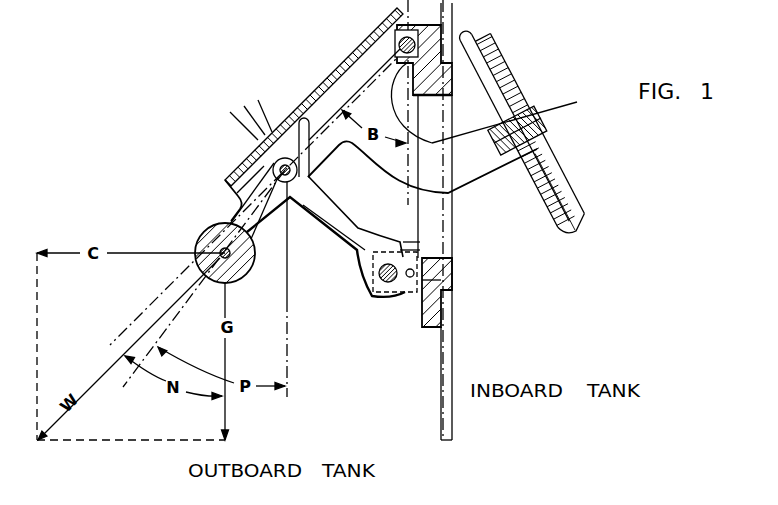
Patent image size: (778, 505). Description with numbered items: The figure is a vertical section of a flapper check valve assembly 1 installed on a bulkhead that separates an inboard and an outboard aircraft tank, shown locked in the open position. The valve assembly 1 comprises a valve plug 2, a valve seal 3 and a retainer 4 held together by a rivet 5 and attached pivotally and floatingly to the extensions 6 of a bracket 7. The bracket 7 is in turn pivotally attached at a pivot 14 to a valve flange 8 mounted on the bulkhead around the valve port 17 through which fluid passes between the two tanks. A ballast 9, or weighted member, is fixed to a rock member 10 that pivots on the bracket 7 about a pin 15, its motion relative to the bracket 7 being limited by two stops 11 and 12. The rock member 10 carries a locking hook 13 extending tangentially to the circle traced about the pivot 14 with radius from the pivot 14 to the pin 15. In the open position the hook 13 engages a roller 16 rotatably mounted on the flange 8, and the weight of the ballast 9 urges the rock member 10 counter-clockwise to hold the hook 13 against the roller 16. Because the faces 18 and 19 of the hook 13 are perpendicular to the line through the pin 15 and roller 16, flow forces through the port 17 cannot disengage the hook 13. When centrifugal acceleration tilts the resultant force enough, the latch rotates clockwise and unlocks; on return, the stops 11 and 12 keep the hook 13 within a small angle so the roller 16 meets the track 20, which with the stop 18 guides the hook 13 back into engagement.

The flapper check valve assembly 1 is at (516, 129).
The valve plug 2 is at (505, 76).
The valve seal 3 is at (478, 34).
The retainer 4 is at (560, 190).
The rivet 5 is at (571, 174).
The extensions 6 is at (488, 172).
The bracket 7 is at (343, 77).
The valve flange 8 is at (453, 267).
The ballast 9 is at (205, 245).
The rock member 10 is at (238, 210).
The stop 11 is at (285, 157).
The stop 12 is at (233, 175).
The locking hook 13 is at (353, 244).
The pivot 14 is at (400, 42).
The pivot pin 15 is at (273, 162).
The roller 16 is at (382, 283).
The valve port 17 is at (450, 222).
The stop 18 is at (408, 232).
The face 19 is at (410, 279).
The track 20 is at (443, 278).